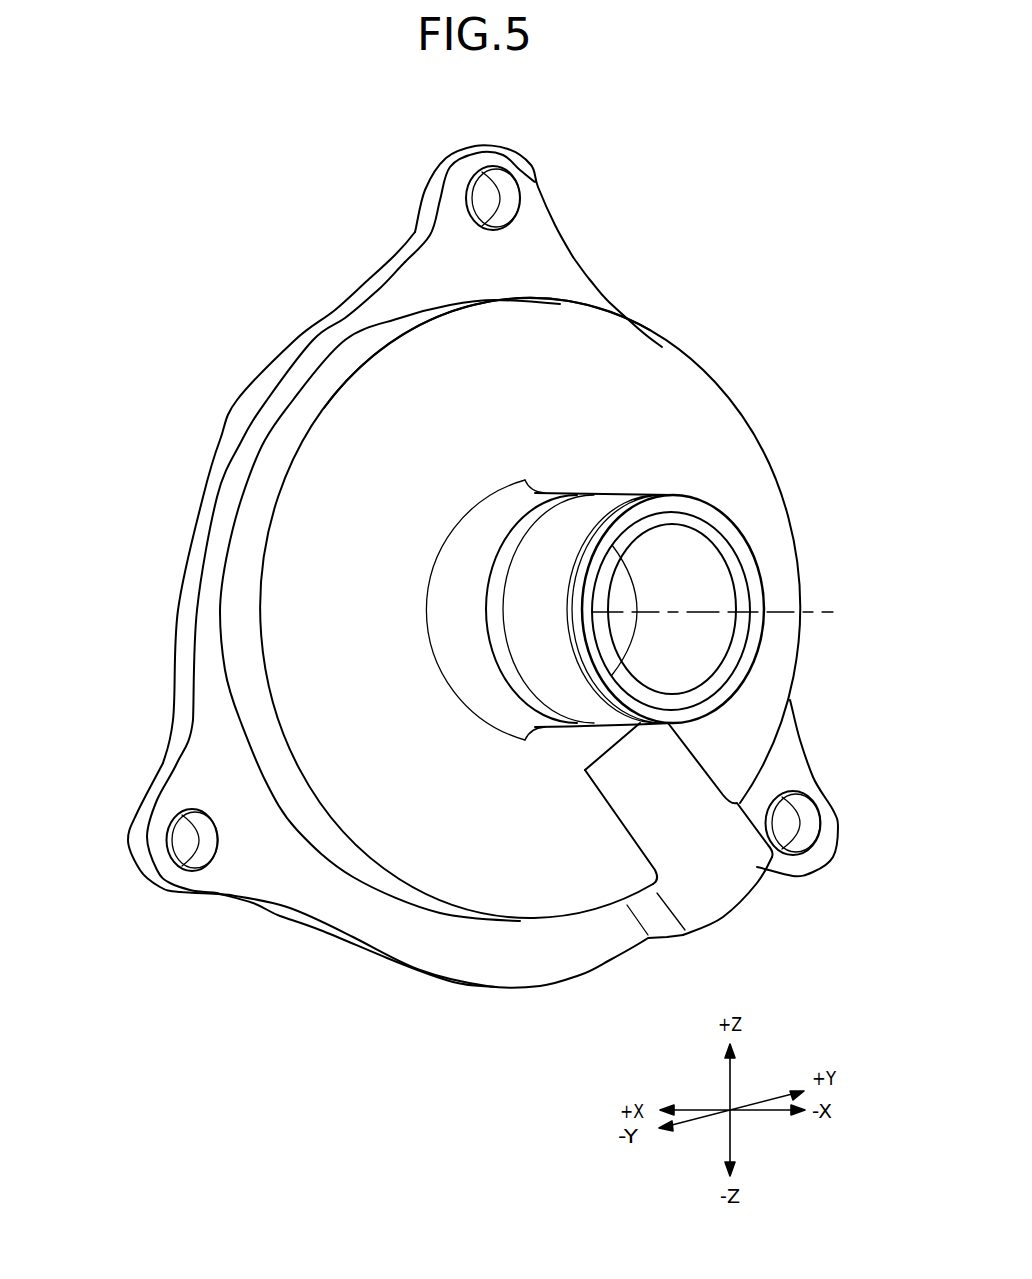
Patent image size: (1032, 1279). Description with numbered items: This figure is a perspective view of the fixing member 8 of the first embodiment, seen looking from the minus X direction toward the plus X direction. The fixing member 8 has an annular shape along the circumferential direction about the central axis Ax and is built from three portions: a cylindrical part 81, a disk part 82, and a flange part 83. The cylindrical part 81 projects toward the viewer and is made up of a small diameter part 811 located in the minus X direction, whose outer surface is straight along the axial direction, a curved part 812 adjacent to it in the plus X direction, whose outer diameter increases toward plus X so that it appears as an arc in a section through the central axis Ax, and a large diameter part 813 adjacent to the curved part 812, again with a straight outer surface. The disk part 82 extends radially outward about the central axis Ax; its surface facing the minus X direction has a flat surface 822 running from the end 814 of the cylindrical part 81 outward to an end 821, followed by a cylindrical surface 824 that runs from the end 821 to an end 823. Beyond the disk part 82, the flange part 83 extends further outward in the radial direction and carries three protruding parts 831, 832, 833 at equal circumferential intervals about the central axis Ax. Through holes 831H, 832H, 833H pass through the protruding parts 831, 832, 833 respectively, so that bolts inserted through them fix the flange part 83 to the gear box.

The fixing member 8 is at (760, 182).
The cylindrical part 81 is at (853, 312).
The small diameter part 811 is at (612, 503).
The curved part 812 is at (575, 495).
The large diameter part 813 is at (535, 492).
The end of the cylindrical part 814 is at (465, 517).
The disk part 82 is at (430, 597).
The end 821 is at (320, 408).
The flat surface 822 is at (600, 347).
The end 823 is at (247, 472).
The cylindrical surface 824 is at (240, 594).
The flange part 83 is at (473, 962).
The protruding part 831 is at (523, 245).
The through hole 831H is at (508, 197).
The protruding part 832 is at (245, 847).
The through hole 832H is at (202, 843).
The protruding part 833 is at (823, 798).
The through hole 833H is at (807, 828).
The central axis Ax is at (813, 603).